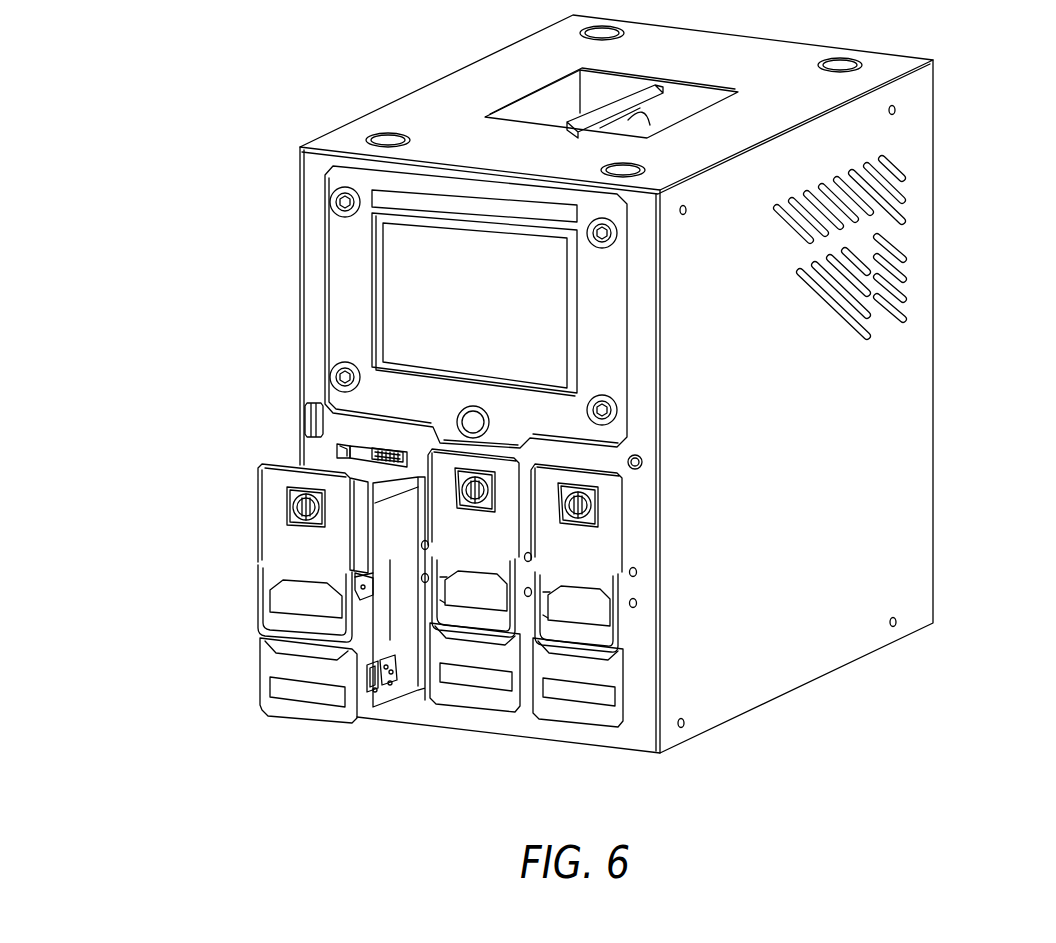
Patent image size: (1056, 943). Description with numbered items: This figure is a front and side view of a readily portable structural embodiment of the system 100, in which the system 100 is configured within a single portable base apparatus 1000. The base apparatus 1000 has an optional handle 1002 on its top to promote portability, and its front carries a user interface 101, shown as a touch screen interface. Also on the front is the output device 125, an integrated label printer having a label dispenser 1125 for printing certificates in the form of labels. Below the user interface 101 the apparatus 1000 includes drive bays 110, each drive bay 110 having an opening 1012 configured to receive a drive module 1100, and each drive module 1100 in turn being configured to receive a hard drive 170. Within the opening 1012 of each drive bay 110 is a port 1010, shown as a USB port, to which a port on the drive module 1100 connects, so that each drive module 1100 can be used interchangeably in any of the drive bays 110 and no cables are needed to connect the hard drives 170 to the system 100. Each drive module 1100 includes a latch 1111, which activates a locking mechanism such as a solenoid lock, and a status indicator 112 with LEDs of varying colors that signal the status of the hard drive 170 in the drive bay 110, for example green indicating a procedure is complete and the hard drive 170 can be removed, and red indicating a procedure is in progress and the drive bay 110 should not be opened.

The system 100 is at (262, 95).
The base apparatus 1000 is at (933, 557).
The handle 1002 is at (580, 84).
The user interface 101 is at (428, 357).
The output device 125 is at (240, 403).
The label dispenser 1125 is at (305, 408).
The port 1010 is at (350, 460).
The opening 1012 is at (272, 450).
The hard drive 170 is at (392, 650).
The drive bay 110 is at (254, 737).
The latch 1111 is at (260, 620).
The drive module 1100 is at (312, 712).
The status indicator 112 is at (287, 517).